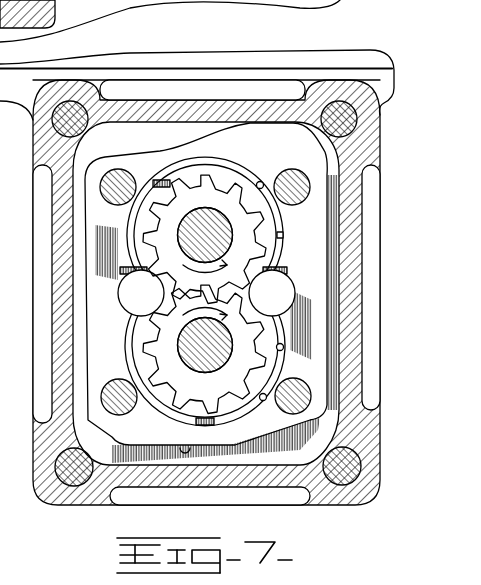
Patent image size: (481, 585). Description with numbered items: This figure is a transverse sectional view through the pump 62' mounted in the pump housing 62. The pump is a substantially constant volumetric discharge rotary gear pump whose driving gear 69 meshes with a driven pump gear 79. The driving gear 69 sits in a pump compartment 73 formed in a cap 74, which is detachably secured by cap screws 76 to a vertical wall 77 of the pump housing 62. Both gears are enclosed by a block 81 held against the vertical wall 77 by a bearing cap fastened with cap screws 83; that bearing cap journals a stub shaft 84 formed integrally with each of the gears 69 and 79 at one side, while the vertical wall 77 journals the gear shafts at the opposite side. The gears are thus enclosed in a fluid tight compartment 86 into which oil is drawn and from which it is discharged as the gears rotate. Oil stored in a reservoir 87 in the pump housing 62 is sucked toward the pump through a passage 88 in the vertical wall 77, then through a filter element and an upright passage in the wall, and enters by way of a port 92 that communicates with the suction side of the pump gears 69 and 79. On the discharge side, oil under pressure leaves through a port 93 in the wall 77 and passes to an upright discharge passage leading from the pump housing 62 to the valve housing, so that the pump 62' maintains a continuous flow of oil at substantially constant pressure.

The pump housing 62 is at (10, 389).
The pump 62' is at (162, 247).
The driving gear 69 is at (222, 397).
The pump compartment 73 is at (128, 460).
The cap 74 is at (288, 475).
The cap screws 76 is at (341, 113).
The vertical wall 77 is at (270, 457).
The driven pump gear 79 is at (233, 195).
The block 81 is at (165, 156).
The cap screws 83 is at (152, 359).
The stub shaft 84 is at (205, 238).
The fluid tight compartment 86 is at (100, 401).
The reservoir 87 is at (14, 549).
The passage 88 is at (0, 43).
The port 92 is at (278, 295).
The port 93 is at (150, 275).